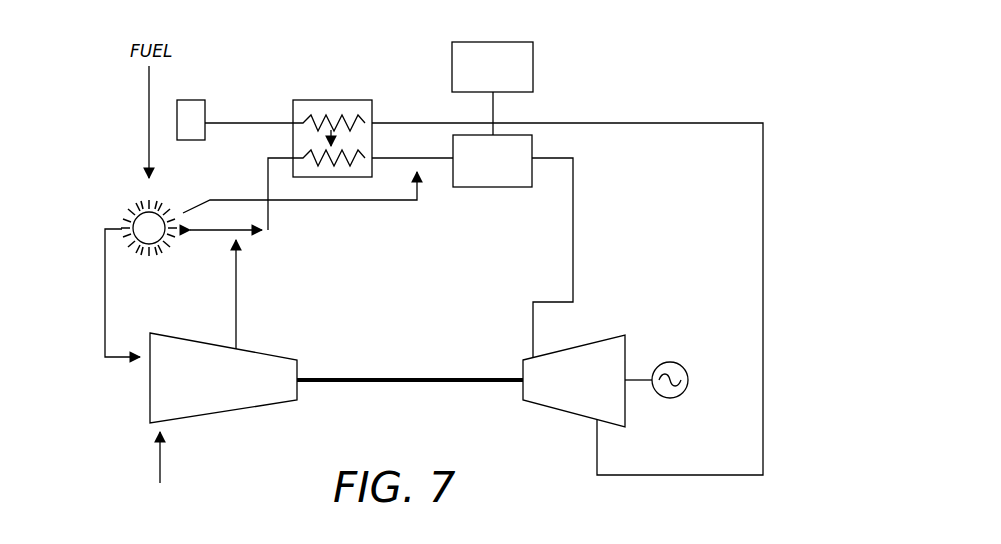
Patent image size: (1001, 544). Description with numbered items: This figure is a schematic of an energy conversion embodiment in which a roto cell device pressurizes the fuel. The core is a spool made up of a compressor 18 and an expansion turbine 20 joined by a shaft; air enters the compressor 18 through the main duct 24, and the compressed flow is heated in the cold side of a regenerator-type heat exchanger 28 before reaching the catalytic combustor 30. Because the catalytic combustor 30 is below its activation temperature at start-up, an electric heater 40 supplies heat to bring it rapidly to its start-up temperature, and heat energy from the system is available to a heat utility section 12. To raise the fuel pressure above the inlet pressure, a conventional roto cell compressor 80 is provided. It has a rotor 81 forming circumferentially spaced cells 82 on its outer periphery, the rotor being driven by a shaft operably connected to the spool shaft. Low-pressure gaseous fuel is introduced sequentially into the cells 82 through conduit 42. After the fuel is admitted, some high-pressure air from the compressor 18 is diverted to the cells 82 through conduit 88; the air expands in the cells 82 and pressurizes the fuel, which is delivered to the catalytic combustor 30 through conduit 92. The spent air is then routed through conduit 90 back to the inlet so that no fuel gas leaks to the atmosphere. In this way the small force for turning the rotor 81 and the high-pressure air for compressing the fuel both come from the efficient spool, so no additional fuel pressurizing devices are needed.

The heat utility section 12 is at (197, 100).
The compressor 18 is at (225, 412).
The expansion turbine 20 is at (546, 405).
The main duct 24 is at (160, 468).
The heat exchanger 28 is at (373, 113).
The catalytic combustor 30 is at (477, 187).
The electric heater 40 is at (533, 73).
The conduit 42 is at (148, 100).
The roto cell compressor 80 is at (142, 272).
The rotor 81 is at (155, 240).
The cells 82 is at (167, 198).
The conduit 88 is at (218, 233).
The conduit 90 is at (105, 300).
The conduit 92 is at (237, 199).